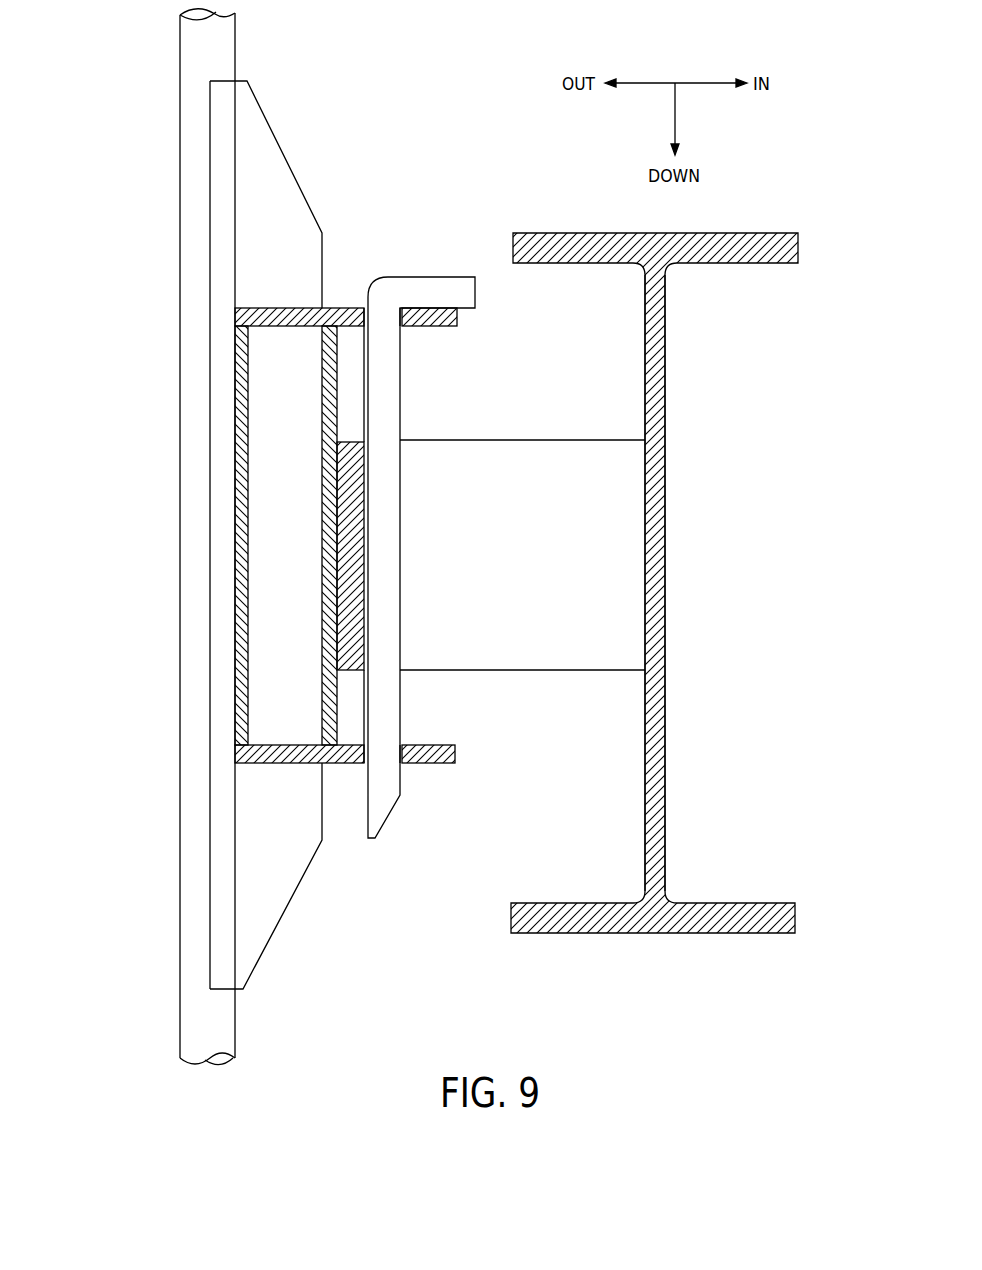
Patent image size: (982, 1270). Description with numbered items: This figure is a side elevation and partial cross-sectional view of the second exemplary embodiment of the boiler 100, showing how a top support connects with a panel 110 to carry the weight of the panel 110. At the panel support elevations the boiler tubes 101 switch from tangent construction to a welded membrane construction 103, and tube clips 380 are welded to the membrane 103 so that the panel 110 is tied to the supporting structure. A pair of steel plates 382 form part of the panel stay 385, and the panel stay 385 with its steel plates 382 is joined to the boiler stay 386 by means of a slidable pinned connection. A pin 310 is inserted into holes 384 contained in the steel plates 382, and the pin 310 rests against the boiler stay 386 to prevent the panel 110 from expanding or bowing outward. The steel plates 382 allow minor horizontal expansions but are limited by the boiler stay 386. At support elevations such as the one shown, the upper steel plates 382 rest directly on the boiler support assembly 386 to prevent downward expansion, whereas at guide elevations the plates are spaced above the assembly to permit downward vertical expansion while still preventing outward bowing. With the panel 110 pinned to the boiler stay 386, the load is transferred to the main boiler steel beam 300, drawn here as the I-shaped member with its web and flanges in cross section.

The boiler 100 is at (658, 583).
The boiler tube 101 is at (193, 352).
The welded membrane construction 103 is at (222, 460).
The panel 110 is at (146, 537).
The main boiler steel beam 300 is at (655, 662).
The pin 310 is at (440, 535).
The tube clip 380 is at (225, 108).
The steel plate 382 is at (452, 320).
The hole 384 is at (400, 322).
The panel stay 385 is at (348, 268).
The boiler stay 386 is at (340, 440).